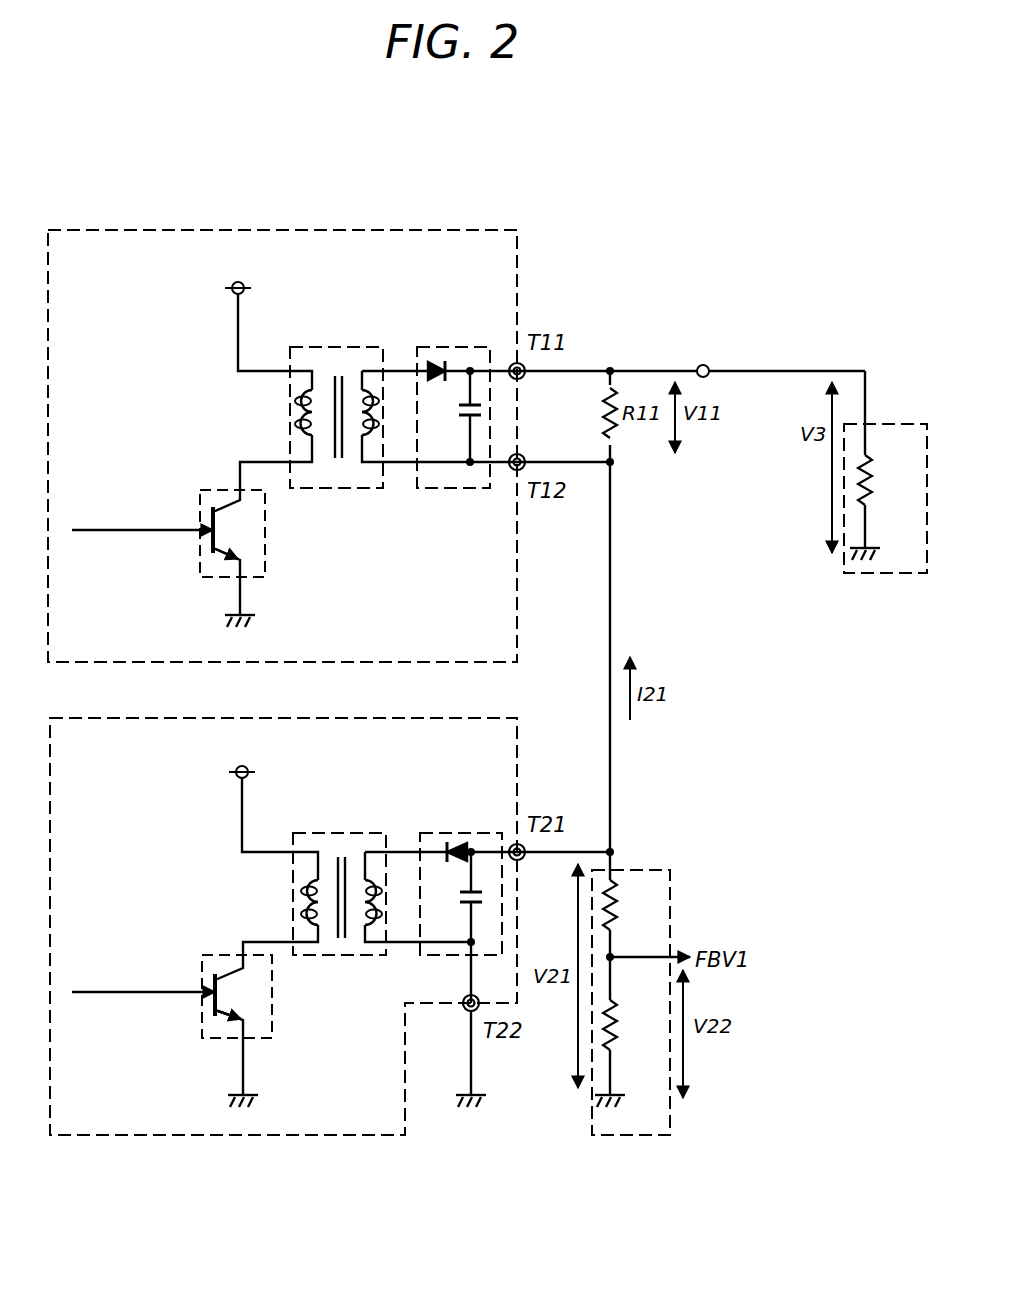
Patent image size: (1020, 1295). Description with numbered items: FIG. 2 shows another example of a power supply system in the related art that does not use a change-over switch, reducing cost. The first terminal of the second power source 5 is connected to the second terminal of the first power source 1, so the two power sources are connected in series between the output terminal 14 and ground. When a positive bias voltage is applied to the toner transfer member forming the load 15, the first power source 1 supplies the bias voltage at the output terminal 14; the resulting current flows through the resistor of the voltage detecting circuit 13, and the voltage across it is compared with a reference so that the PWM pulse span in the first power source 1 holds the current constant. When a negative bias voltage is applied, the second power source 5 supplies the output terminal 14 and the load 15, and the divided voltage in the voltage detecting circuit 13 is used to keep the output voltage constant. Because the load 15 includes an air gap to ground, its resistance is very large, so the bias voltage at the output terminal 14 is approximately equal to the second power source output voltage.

The first power source 1 is at (252, 228).
The second power source 5 is at (255, 717).
The voltage detecting circuit 13 is at (672, 915).
The output terminal 14 is at (703, 364).
The load 15 is at (880, 420).